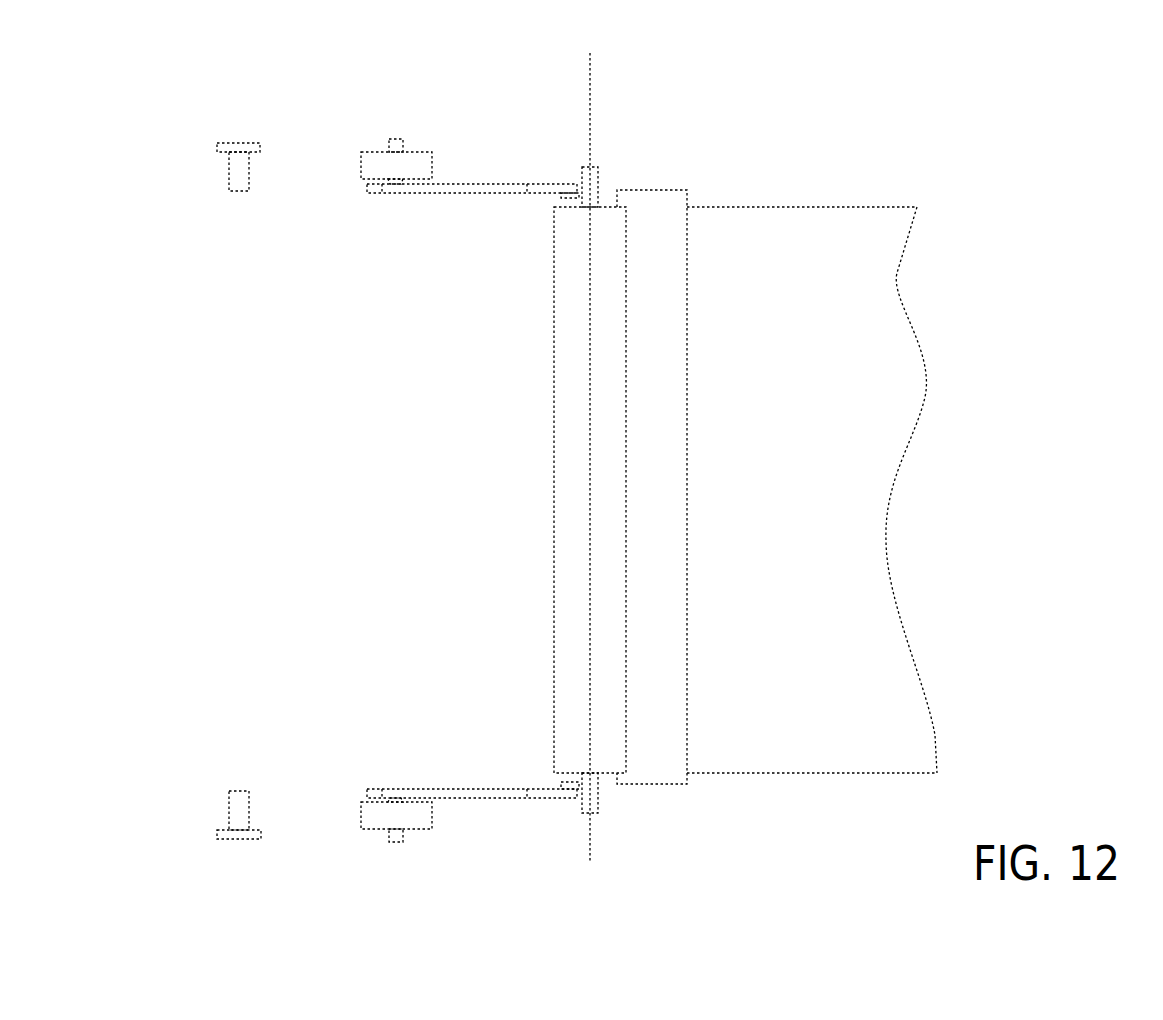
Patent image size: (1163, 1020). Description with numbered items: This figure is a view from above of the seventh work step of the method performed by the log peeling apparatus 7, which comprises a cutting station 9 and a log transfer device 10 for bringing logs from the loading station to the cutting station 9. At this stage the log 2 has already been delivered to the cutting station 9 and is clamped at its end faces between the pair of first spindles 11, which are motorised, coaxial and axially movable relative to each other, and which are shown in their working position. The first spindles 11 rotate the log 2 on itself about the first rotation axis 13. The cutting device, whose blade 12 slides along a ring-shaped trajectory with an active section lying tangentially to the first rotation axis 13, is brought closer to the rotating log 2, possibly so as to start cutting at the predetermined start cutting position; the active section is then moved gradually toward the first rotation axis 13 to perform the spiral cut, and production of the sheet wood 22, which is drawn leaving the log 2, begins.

The log 2 is at (514, 500).
The log peeling apparatus 7 is at (827, 523).
The cutting station 9 is at (827, 523).
The log transfer device 10 is at (468, 832).
The first spindles 11 is at (590, 180).
The blade 12 is at (657, 760).
The first rotation axis 13 is at (575, 91).
The sheet wood 22 is at (833, 457).